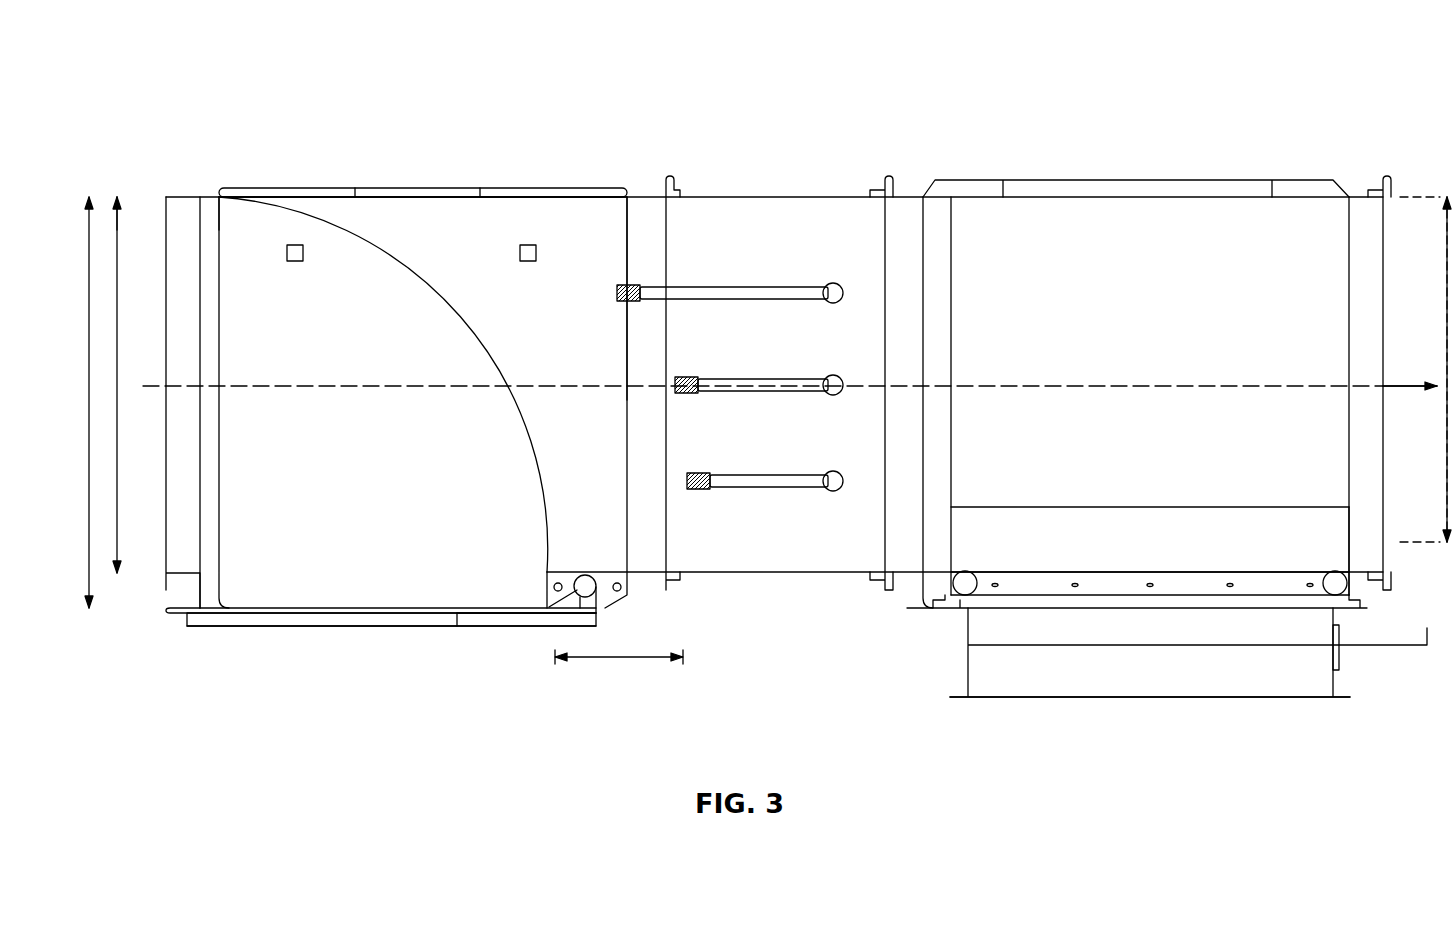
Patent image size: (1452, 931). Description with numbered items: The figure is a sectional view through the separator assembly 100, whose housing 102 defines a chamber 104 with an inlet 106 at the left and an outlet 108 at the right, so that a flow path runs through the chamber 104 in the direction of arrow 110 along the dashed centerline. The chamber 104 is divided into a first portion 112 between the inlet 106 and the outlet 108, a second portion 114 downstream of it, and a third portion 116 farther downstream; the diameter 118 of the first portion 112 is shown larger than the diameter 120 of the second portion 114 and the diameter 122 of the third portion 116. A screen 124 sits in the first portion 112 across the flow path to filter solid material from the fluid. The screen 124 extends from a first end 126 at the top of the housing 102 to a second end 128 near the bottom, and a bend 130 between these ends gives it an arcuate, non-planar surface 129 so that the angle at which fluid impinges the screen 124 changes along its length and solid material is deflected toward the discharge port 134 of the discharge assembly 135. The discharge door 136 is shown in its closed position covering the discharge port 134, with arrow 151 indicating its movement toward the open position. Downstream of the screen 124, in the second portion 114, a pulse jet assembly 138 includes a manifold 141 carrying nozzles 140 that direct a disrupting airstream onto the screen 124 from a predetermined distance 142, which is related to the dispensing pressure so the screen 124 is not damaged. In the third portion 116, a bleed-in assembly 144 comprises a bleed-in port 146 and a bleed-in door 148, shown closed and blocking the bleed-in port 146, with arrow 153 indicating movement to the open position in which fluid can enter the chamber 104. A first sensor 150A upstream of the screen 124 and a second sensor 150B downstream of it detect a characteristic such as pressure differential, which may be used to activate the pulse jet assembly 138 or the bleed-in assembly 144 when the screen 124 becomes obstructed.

The separator assembly 100 is at (1210, 88).
The housing 102 is at (490, 195).
The chamber 104 is at (550, 208).
The inlet 106 is at (165, 522).
The outlet 108 is at (1360, 532).
The arrow 110 is at (1418, 385).
The first portion 112 is at (400, 205).
The second portion 114 is at (730, 205).
The third portion 116 is at (1062, 213).
The diameter of the first portion 118 is at (88, 583).
The diameter of the second portion 120 is at (117, 218).
The diameter of the third portion 122 is at (1445, 307).
The screen 124 is at (458, 322).
The first end 126 is at (219, 198).
The second end 128 is at (547, 586).
The non-planar surface 129 is at (415, 282).
The bend 130 is at (490, 348).
The discharge port 134 is at (200, 590).
The discharge assembly 135 is at (265, 688).
The discharge door 136 is at (374, 620).
The pulse jet assembly 138 is at (779, 262).
The nozzle 140 is at (617, 293).
The manifold 141 is at (680, 287).
The predetermined distance 142 is at (593, 662).
The bleed-in assembly 144 is at (910, 683).
The bleed-in port 146 is at (968, 623).
The bleed-in door 148 is at (1042, 583).
The first sensor 150A is at (292, 262).
The second sensor 150B is at (528, 262).
The arrow 151 is at (445, 712).
The arrow 153 is at (1162, 522).